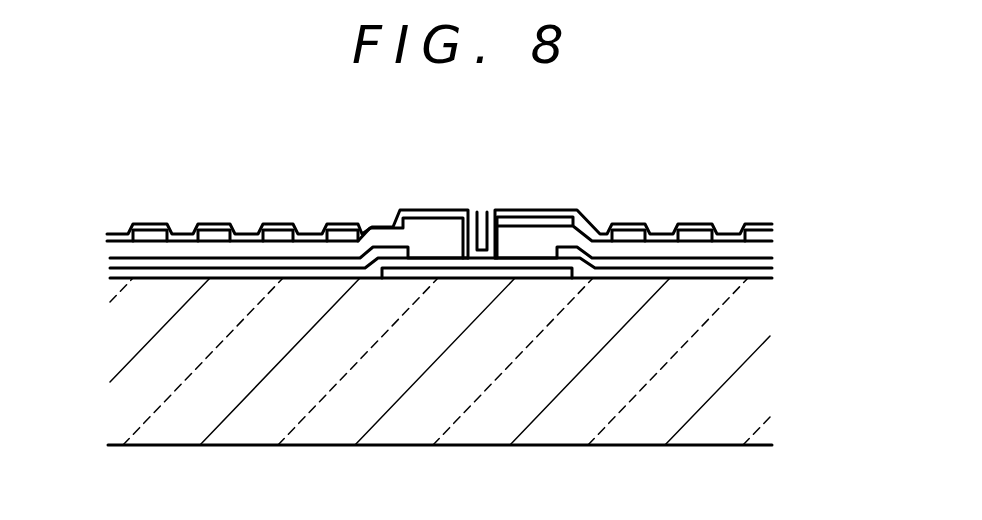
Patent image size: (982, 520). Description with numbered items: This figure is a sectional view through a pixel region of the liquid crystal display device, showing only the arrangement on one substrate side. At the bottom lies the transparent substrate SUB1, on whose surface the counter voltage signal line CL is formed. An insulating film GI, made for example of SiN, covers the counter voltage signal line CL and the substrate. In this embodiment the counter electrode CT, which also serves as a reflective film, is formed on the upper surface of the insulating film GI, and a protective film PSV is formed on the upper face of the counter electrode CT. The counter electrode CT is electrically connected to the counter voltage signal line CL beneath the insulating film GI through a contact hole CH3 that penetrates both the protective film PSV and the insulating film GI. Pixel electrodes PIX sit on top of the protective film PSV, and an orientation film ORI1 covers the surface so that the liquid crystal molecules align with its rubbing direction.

The orientation film ORI1 is at (213, 226).
The pixel electrode PIX is at (347, 232).
The contact hole CH3 is at (513, 212).
The counter electrode CT is at (110, 267).
The protective film PSV is at (767, 247).
The insulating film GI is at (763, 271).
The transparent substrate SUB1 is at (740, 352).
The counter voltage signal line CL is at (412, 270).